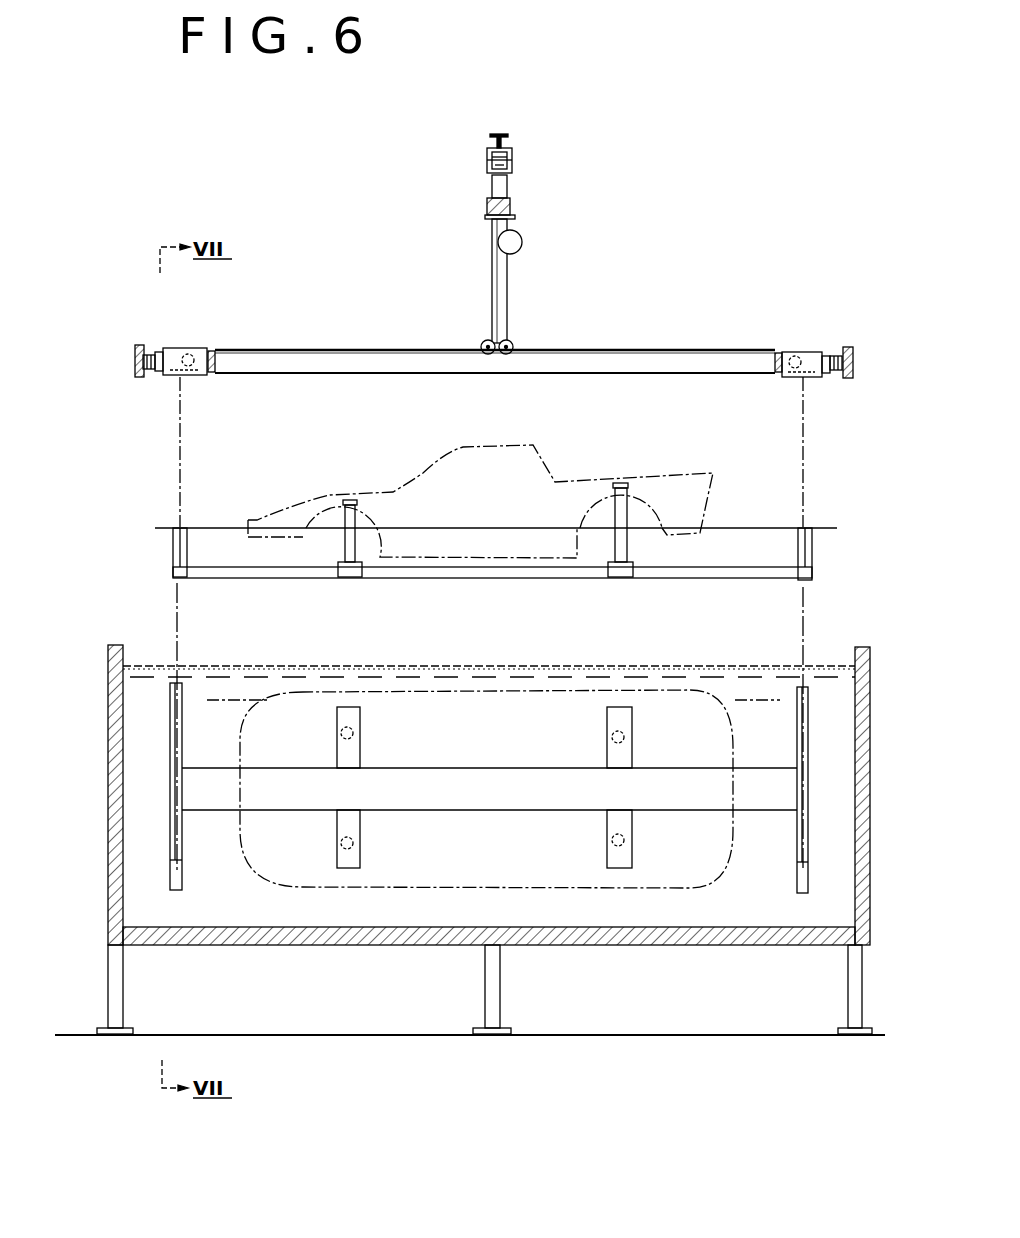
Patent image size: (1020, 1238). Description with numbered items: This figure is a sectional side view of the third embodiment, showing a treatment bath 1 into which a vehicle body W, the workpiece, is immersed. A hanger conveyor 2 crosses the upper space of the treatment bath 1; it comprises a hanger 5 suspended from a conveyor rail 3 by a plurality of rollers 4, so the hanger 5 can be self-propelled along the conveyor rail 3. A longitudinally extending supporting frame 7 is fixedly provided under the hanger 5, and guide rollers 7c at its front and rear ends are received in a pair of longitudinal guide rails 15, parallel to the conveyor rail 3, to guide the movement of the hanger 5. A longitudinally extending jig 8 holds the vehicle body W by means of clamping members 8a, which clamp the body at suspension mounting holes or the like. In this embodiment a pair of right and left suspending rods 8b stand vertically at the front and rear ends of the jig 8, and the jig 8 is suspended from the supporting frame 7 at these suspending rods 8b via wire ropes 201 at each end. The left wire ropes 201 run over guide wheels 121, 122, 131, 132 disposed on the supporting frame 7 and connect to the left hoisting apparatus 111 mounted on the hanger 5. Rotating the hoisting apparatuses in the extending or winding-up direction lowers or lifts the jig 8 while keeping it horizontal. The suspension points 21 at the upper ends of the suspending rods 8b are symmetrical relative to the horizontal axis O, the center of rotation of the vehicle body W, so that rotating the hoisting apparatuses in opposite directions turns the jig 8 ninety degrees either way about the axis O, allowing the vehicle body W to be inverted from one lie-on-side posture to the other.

The treatment bath 1 is at (288, 940).
The hanger conveyor 2 is at (497, 132).
The conveyor rail 3 is at (493, 138).
The rollers 4 is at (490, 152).
The hanger 5 is at (491, 263).
The supporting frame 7 is at (495, 354).
The guide rollers 7c is at (157, 350).
The jig 8 is at (494, 661).
The clamping members 8a is at (352, 500).
The suspending rods 8b is at (178, 543).
The guide rails 15 is at (135, 360).
The suspension points 21 is at (178, 527).
The left hoisting apparatus 111 is at (516, 246).
The guide wheel 121 is at (187, 356).
The guide wheel 122 is at (482, 341).
The guide wheel 131 is at (793, 352).
The guide wheel 132 is at (512, 341).
The left wire ropes 201 is at (277, 349).
The horizontal axis O is at (218, 527).
The vehicle body W is at (525, 453).